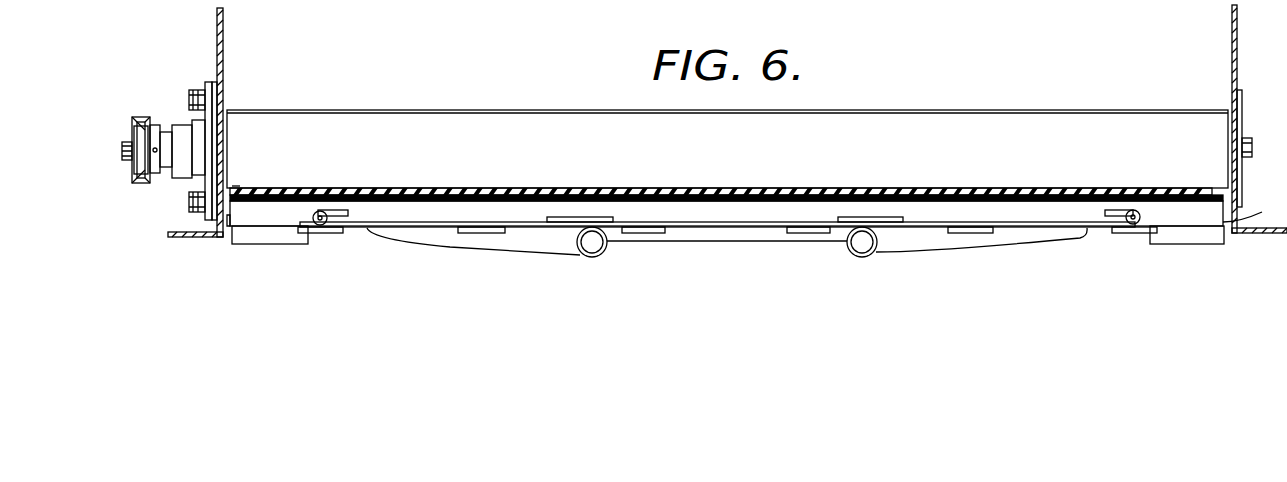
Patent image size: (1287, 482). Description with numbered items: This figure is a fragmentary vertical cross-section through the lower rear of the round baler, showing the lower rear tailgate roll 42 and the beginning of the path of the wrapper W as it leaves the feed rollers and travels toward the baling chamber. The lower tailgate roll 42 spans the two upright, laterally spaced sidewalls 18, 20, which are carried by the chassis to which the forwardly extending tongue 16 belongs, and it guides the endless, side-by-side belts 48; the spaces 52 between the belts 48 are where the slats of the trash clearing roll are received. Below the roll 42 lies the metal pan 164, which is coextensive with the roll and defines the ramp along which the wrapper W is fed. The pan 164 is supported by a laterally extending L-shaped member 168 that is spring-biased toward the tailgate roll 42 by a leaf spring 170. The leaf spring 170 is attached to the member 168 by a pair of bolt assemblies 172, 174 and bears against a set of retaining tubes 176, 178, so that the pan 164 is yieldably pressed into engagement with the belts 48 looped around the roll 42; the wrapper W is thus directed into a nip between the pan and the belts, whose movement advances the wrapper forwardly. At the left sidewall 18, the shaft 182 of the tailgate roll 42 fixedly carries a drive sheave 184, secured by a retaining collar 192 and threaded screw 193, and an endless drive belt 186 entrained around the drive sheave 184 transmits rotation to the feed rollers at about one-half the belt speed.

The tongue 16 is at (1255, 214).
The left sidewall 18 is at (222, 24).
The sidewall 20 is at (1237, 25).
The lower tailgate roll 42 is at (857, 118).
The belts 48 is at (305, 188).
The spaces 52 is at (400, 188).
The wrapper W is at (236, 188).
The metal pan 164 is at (970, 204).
The L-shaped member 168 is at (265, 218).
The leaf spring 170 is at (731, 228).
The bolt assembly 172 is at (322, 226).
The bolt assembly 174 is at (1135, 225).
The retaining tube 176 is at (600, 254).
The retaining tube 178 is at (854, 254).
The shaft 182 is at (165, 137).
The drive sheave 184 is at (130, 128).
The drive belt 186 is at (137, 118).
The retaining collar 192 is at (158, 177).
The threaded screw 193 is at (120, 151).